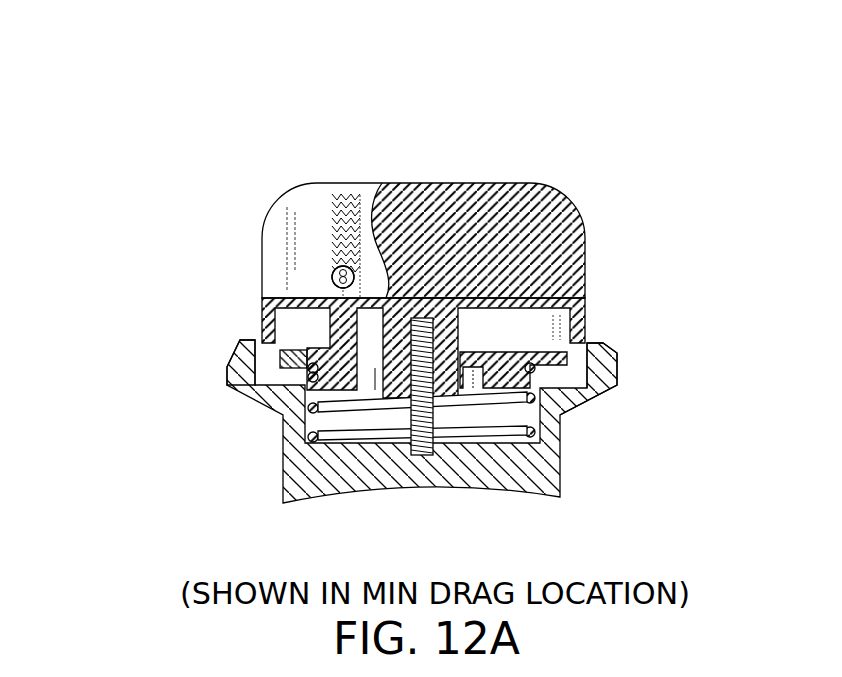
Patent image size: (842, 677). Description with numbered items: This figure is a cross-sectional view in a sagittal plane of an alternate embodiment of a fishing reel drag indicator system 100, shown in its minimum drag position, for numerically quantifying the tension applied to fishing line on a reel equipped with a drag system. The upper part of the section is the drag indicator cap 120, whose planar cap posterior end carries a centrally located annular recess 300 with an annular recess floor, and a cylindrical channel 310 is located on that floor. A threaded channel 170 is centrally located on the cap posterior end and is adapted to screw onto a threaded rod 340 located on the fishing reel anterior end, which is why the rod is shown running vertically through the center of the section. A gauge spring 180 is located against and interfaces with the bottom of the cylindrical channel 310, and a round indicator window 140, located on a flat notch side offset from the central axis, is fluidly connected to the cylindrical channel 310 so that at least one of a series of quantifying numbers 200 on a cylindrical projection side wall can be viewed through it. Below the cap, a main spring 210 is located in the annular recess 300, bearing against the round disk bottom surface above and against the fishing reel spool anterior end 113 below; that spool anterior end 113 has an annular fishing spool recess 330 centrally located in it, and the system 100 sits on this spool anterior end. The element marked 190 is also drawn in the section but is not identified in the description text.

The fishing reel drag indicator system 100 is at (175, 115).
The drag indicator cap 120 is at (598, 217).
The threaded channel 170 is at (518, 192).
The gauge spring 180 is at (337, 213).
The cylindrical channel 310 is at (343, 195).
The series of quantifying numbers 200 is at (333, 283).
The round indicator window 140 is at (333, 273).
The main spring 210 is at (283, 430).
The fishing reel spool anterior end 113 is at (228, 373).
The annular recess 300 is at (592, 367).
The friction member 190 is at (283, 362).
The annular fishing spool recess 330 is at (535, 416).
The threaded rod 340 is at (433, 420).